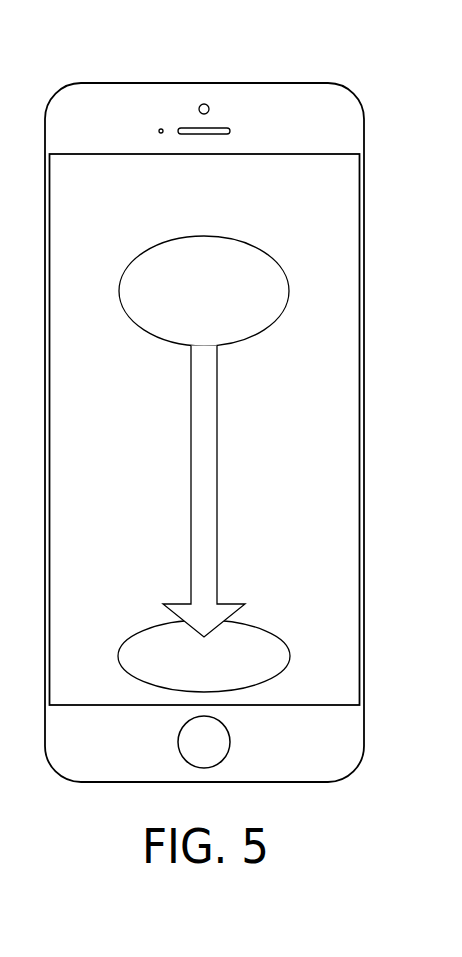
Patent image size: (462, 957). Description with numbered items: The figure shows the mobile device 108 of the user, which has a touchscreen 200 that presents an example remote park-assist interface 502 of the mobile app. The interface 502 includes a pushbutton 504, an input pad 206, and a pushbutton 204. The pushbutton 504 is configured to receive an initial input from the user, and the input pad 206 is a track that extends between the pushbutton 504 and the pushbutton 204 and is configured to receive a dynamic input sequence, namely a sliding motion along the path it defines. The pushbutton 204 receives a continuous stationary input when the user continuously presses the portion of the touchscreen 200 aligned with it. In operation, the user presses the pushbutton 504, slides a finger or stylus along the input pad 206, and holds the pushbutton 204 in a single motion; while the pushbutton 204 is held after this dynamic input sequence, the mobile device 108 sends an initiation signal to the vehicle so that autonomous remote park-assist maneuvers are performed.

The mobile device 108 is at (217, 83).
The touchscreen 200 is at (312, 195).
The interface 502 is at (183, 194).
The pushbutton 504 is at (183, 306).
The pushbutton 204 is at (184, 669).
The input pad 206 is at (217, 460).